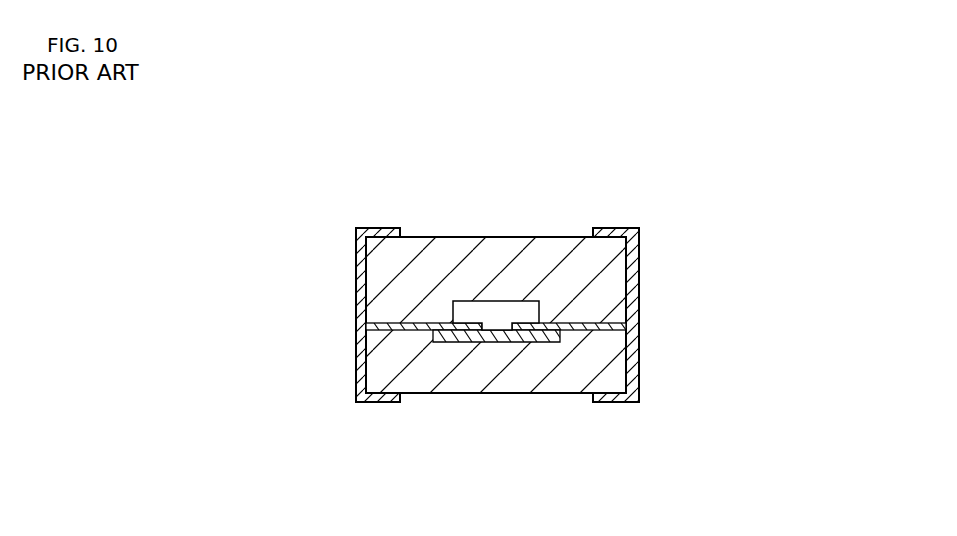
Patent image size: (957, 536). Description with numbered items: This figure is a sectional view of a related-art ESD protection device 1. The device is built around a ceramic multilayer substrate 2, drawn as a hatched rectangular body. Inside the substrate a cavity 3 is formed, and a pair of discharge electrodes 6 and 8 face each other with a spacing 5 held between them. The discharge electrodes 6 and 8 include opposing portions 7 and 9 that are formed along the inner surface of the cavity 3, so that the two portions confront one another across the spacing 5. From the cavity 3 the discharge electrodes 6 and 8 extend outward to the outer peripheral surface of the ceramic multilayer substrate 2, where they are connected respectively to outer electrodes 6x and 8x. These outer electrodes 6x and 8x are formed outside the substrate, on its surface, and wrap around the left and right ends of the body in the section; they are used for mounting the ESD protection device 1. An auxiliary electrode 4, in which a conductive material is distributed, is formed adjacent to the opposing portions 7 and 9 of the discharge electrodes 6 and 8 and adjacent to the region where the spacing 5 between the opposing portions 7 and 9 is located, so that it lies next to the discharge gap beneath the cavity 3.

The ESD protection device 1 is at (750, 149).
The ceramic multilayer substrate 2 is at (577, 243).
The cavity 3 is at (500, 312).
The auxiliary electrode 4 is at (488, 342).
The spacing 5 is at (493, 342).
The discharge electrode 6 is at (412, 330).
The opposing portion 7 is at (462, 342).
The discharge electrode 8 is at (568, 342).
The opposing portion 9 is at (532, 342).
The outer electrode 6x is at (356, 276).
The outer electrode 8x is at (639, 270).